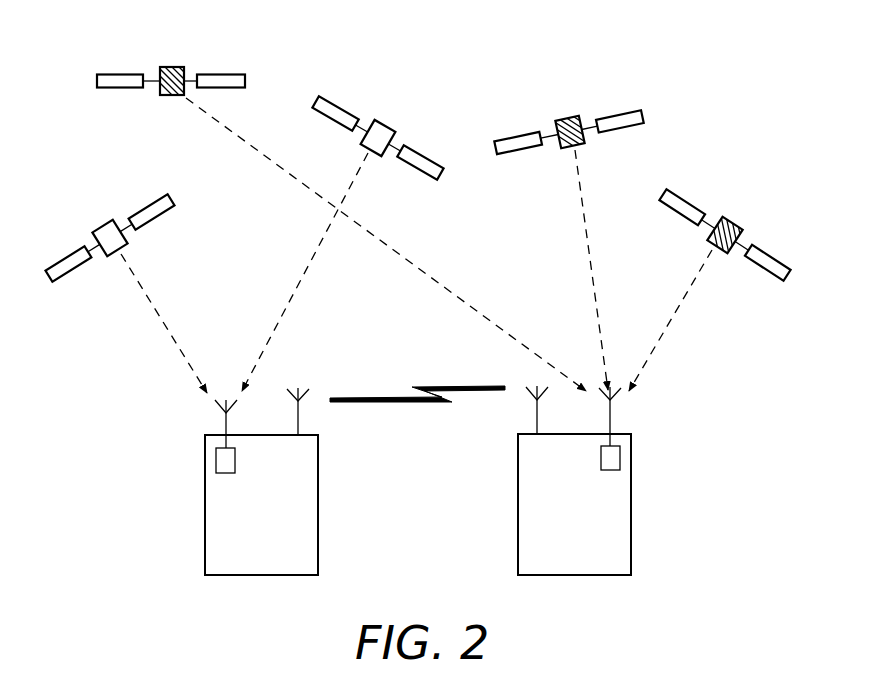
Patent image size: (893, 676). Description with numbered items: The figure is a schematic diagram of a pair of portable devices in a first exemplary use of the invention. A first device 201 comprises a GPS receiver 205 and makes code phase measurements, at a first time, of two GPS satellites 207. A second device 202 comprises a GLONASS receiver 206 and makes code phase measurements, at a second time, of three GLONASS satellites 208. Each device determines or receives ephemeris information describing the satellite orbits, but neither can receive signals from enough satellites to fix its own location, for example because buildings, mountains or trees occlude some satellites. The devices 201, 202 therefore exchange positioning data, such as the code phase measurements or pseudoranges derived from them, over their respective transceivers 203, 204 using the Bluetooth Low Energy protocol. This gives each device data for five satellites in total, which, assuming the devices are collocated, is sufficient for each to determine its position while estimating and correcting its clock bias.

The device 201 is at (318, 512).
The device 202 is at (518, 512).
The transceiver 203 is at (298, 415).
The transceiver 204 is at (537, 412).
The GPS receiver 205 is at (216, 458).
The GLONASS receiver 206 is at (620, 455).
The GPS satellites 207 is at (392, 132).
The GLONASS satellites 208 is at (161, 67).